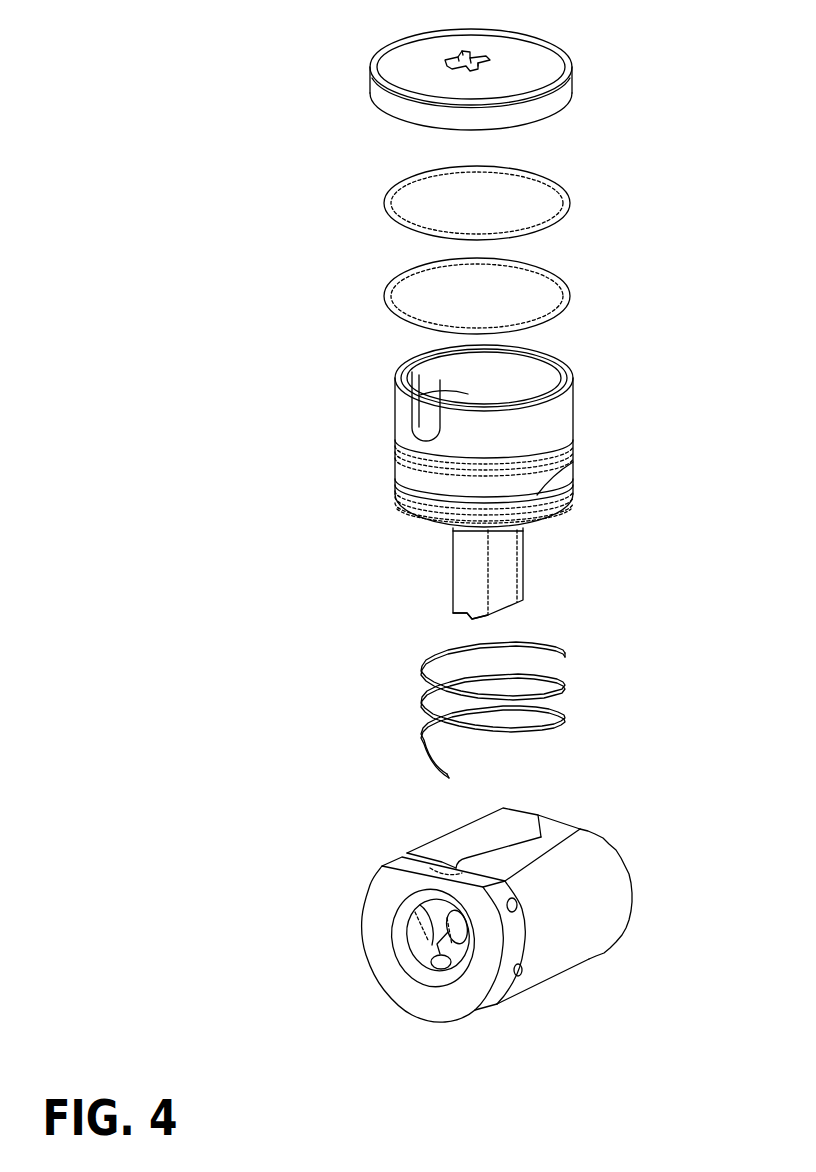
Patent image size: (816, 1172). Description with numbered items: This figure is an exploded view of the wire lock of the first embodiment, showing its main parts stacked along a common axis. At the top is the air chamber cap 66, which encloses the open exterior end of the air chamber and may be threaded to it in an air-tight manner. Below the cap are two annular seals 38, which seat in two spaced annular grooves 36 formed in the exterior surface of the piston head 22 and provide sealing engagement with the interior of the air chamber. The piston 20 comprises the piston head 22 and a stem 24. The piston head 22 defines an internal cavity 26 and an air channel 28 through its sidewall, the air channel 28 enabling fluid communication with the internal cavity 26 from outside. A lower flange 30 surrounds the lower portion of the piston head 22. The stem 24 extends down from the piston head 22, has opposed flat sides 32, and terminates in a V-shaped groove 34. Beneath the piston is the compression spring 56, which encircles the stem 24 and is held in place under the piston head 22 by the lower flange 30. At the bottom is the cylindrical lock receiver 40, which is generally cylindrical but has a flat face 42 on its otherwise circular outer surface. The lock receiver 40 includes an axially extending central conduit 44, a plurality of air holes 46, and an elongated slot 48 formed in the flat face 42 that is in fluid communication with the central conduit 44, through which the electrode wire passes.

The piston 20 is at (476, 477).
The piston head 22 is at (552, 418).
The stem 24 is at (525, 547).
The internal cavity 26 is at (462, 393).
The air channel 28 is at (420, 424).
The lower flange 30 is at (405, 528).
The flat sides 32 is at (503, 567).
The V-shaped groove 34 is at (467, 617).
The annular groove 36 is at (557, 445).
The annular seal 38 is at (541, 224).
The cylindrical lock receiver 40 is at (492, 935).
The flat face 42 is at (580, 842).
The central conduit 44 is at (457, 930).
The air holes 46 is at (512, 910).
The elongated slot 48 is at (522, 833).
The compression spring 56 is at (563, 694).
The air chamber cap 66 is at (557, 66).